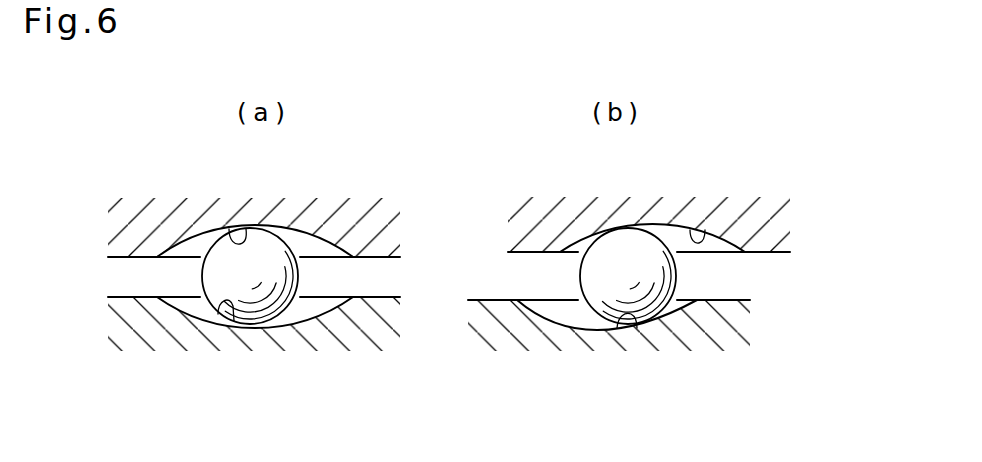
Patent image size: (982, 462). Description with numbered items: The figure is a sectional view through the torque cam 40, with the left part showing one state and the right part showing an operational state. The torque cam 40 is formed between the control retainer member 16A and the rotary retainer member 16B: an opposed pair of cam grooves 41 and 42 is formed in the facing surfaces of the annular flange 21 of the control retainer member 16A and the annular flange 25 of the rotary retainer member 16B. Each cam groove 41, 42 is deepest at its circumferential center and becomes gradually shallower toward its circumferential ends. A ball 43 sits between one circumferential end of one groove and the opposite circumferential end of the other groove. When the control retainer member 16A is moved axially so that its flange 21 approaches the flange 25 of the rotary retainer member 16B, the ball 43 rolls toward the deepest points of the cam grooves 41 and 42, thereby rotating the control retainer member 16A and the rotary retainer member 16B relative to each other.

The control retainer member 16A is at (153, 200).
The rotary retainer member 16B is at (131, 358).
The annular flange 21 is at (209, 205).
The annular flange 25 is at (187, 340).
The torque cam 40 is at (302, 220).
The cam groove 41 is at (240, 236).
The cam groove 42 is at (233, 327).
The ball 43 is at (278, 300).